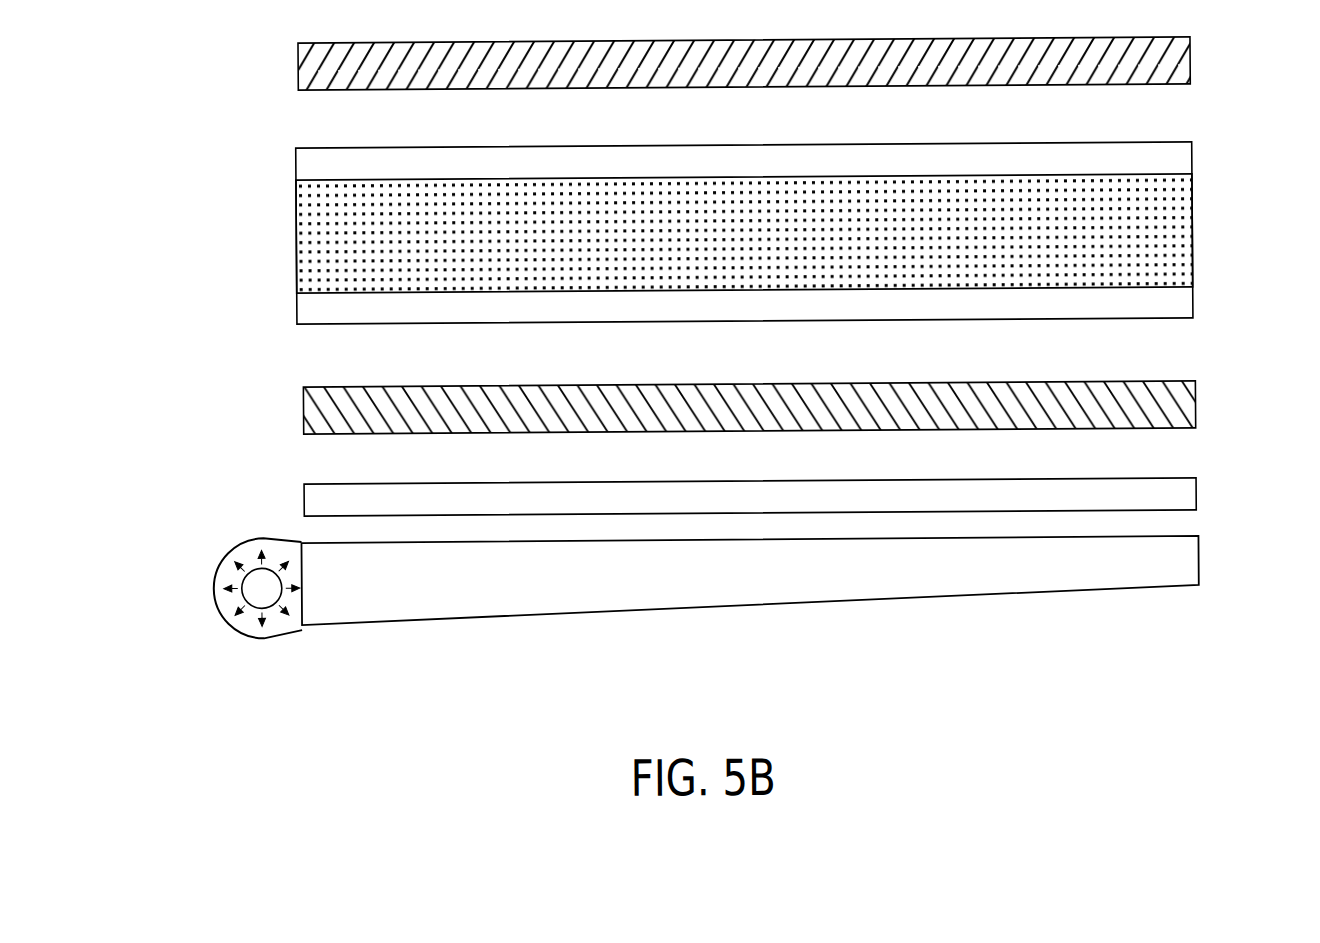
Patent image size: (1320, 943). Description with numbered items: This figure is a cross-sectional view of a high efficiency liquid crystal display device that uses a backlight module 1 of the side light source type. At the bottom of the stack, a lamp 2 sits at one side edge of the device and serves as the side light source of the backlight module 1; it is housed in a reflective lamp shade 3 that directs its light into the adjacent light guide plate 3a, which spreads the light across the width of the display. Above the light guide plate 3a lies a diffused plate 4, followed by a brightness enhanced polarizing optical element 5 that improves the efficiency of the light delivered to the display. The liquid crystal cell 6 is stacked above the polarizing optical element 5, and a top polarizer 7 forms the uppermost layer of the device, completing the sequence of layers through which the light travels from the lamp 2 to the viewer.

The backlight module 1 is at (698, 590).
The lamp 2 is at (262, 612).
The reflective lamp shade 3 is at (642, 617).
The light guide plate 3a is at (825, 601).
The diffused plate 4 is at (325, 495).
The brightness enhanced polarizing optical element 5 is at (318, 419).
The liquid crystal cell 6 is at (260, 160).
The top polarizer 7 is at (318, 60).